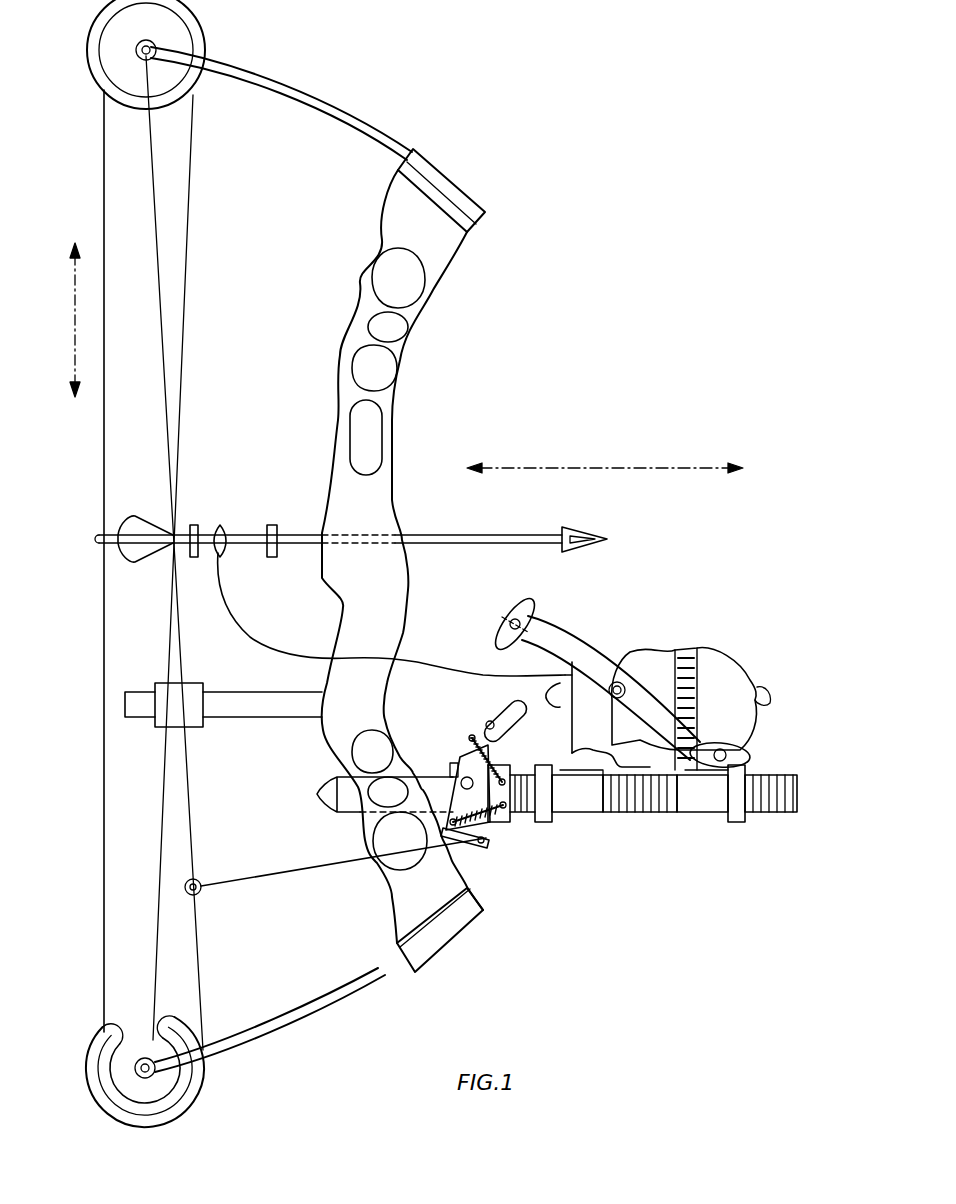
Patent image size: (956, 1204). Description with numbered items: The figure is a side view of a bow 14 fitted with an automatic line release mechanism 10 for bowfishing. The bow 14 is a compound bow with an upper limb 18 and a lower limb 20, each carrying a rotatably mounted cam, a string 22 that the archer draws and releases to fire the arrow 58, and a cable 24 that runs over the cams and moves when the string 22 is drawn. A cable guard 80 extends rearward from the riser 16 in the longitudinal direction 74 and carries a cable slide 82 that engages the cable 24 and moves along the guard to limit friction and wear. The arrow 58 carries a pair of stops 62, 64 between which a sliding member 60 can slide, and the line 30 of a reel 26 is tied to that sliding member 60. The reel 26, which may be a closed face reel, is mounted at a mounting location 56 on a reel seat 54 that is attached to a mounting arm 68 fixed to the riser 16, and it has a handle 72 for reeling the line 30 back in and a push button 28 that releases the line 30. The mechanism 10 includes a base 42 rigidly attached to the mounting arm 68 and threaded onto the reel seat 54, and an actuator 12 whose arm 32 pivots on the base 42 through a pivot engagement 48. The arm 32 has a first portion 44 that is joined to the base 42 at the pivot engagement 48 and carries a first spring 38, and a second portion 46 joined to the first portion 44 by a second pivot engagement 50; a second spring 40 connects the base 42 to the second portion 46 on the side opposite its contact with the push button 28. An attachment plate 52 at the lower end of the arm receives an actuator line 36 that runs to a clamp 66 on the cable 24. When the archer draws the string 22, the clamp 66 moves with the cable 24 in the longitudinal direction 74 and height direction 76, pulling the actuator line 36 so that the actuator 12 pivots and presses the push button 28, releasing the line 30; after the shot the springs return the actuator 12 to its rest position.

The automatic line release mechanism 10 is at (518, 882).
The actuator 12 is at (462, 742).
The bow 14 is at (455, 141).
The riser 16 is at (388, 400).
The upper limb 18 is at (286, 74).
The lower limb 20 is at (318, 1010).
The string 22 is at (103, 440).
The cable 24 is at (195, 820).
The reel 26 is at (707, 653).
The push button 28 is at (563, 685).
The line 30 is at (267, 640).
The arm 32 is at (466, 725).
The actuator line 36 is at (292, 873).
The first spring 38 is at (490, 817).
The second spring 40 is at (497, 762).
The base 42 is at (503, 820).
The first portion 44 is at (437, 800).
The second portion 46 is at (492, 715).
The pivot engagement 48 is at (449, 790).
The pivot engagement 50 is at (480, 724).
The attachment plate 52 is at (460, 843).
The reel seat 54 is at (770, 817).
The mounting location 56 is at (592, 810).
The arrow 58 is at (500, 535).
The sliding member 60 is at (222, 525).
The stop 62 is at (192, 525).
The stop 64 is at (272, 525).
The clamp 66 is at (202, 892).
The mounting arm 68 is at (433, 818).
The handle 72 is at (538, 628).
The longitudinal direction 74 is at (612, 468).
The height direction 76 is at (73, 313).
The cable guard 80 is at (160, 683).
The cable slide 82 is at (288, 708).